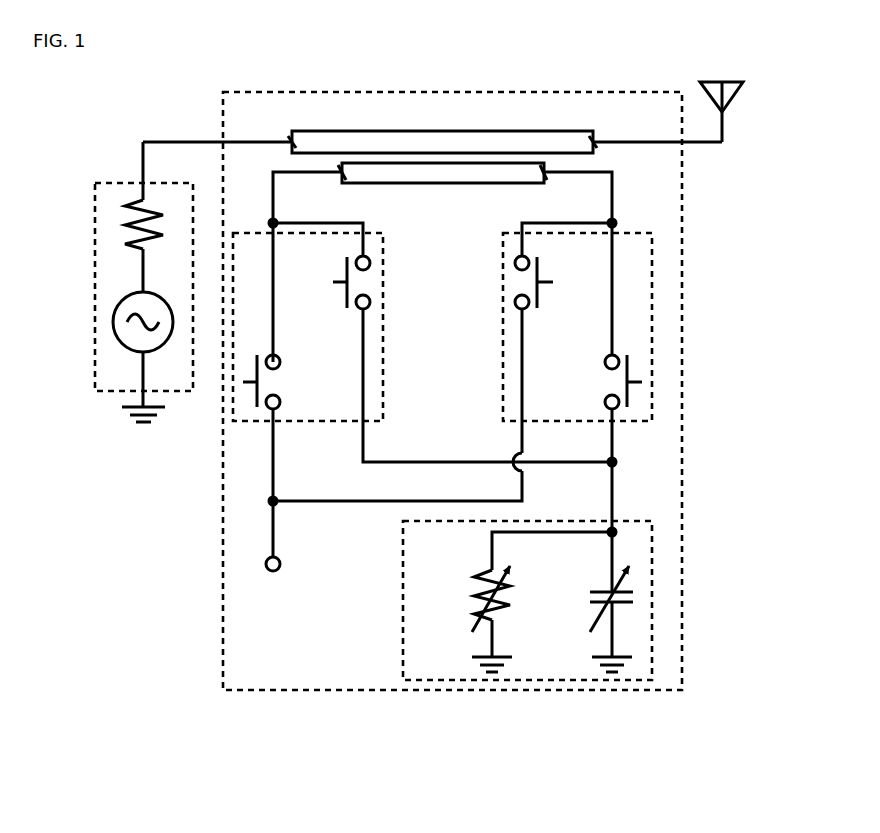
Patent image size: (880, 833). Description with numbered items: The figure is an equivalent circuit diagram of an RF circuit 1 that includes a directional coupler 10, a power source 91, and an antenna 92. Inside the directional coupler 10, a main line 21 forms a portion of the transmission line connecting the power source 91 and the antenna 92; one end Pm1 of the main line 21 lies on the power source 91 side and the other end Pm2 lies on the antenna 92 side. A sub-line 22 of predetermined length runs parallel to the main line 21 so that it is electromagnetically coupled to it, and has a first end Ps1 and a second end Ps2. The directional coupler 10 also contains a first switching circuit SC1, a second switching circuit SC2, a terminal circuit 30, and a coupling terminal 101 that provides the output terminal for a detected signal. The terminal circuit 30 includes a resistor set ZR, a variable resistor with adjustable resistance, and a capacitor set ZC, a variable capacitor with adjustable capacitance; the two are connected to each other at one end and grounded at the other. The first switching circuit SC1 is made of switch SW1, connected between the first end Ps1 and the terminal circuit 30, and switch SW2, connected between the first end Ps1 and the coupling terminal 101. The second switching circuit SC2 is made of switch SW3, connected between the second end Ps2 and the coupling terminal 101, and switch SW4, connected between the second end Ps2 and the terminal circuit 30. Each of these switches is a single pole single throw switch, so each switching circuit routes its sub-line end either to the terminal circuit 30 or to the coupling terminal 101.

The RF circuit 1 is at (238, 77).
The directional coupler 10 is at (643, 92).
The main line 21 is at (449, 131).
The sub-line 22 is at (445, 185).
The one end of the main line Pm1 is at (289, 139).
The other end of the main line Pm2 is at (598, 139).
The first end of the sub-line Ps1 is at (339, 178).
The second end of the sub-line Ps2 is at (547, 178).
The first switching circuit SC1 is at (384, 263).
The second switching circuit SC2 is at (503, 366).
The switch SW1 is at (340, 277).
The switch SW2 is at (283, 353).
The switch SW3 is at (543, 276).
The switch SW4 is at (604, 353).
The terminal circuit 30 is at (403, 592).
The resistor set ZR is at (463, 605).
The capacitor set ZC is at (590, 612).
The coupling terminal 101 is at (272, 572).
The power source 91 is at (121, 183).
The antenna 92 is at (735, 86).